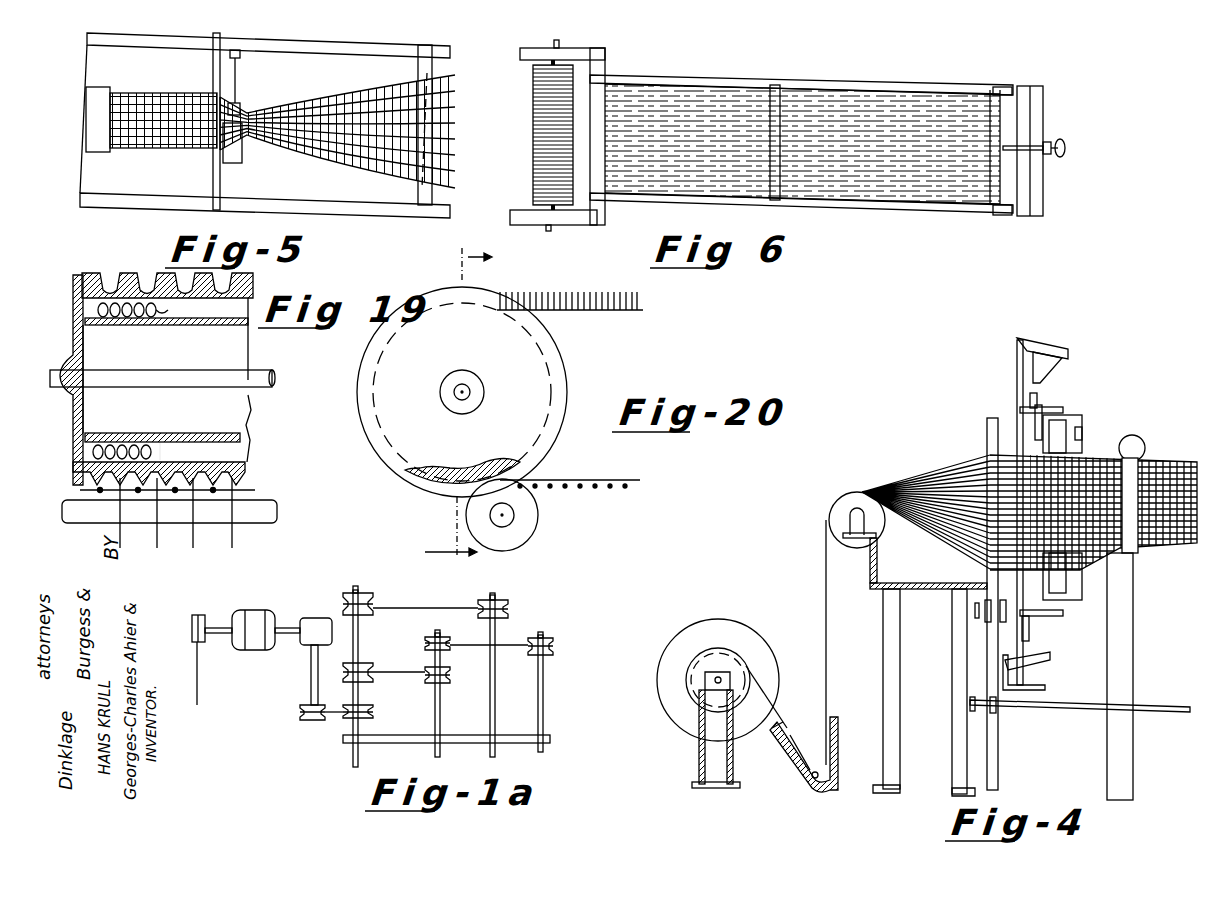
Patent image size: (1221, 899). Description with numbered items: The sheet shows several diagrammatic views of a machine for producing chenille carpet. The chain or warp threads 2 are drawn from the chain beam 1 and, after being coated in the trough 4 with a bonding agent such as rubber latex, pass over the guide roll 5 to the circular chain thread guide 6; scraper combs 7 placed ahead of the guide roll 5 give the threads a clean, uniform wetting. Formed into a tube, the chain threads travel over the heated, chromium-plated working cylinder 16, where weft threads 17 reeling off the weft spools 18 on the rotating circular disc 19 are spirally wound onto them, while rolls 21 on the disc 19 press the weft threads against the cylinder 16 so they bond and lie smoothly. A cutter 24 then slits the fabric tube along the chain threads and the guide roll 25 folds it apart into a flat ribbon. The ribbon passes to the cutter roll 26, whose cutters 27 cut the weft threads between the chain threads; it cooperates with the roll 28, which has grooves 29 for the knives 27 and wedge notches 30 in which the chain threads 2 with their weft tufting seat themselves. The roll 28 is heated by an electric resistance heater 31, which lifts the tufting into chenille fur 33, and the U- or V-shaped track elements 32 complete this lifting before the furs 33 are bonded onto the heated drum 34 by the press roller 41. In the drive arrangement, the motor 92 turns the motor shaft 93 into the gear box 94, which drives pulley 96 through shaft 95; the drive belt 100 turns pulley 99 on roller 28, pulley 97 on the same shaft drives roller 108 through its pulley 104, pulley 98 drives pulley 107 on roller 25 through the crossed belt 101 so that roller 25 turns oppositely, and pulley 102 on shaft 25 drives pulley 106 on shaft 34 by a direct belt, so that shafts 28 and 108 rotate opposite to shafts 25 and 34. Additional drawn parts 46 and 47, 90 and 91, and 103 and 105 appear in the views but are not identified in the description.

In FIG. 4, the chain beam 1 is at (724, 623).
In FIG. 19, the chain or warp threads 2 is at (100, 492).
In FIG. 20, the chain or warp threads 2 is at (603, 312).
In FIG. 4, the chain or warp threads 2 is at (823, 646).
In FIG. 4, the trough 4 is at (797, 735).
In FIG. 4, the guide roll 5 is at (832, 512).
In FIG. 4, the circular chain thread guide 6 is at (990, 424).
In FIG. 4, the scraper combs 7 is at (836, 718).
In FIG. 5, the working cylinder 16 is at (141, 148).
In FIG. 4, the working cylinder 16 is at (1085, 432).
In FIG. 19, the weft threads 17 is at (255, 490).
In FIG. 20, the weft threads 17 is at (605, 483).
In FIG. 4, the weft threads 17 is at (1037, 398).
In FIG. 4, the weft spools 18 is at (1048, 371).
In FIG. 20, the circular disc 19 is at (458, 402).
In FIG. 4, the circular disc 19 is at (1017, 367).
In FIG. 4, the rolls 21 is at (1085, 450).
In FIG. 5, the cutter 24 is at (245, 122).
In FIG. 4, the cutter 24 is at (1147, 442).
In FIG. 5, the guide roll 25 is at (423, 62).
In FIG. 1A, the guide roll 25 is at (432, 755).
In FIG. 19, the cutter roll 26 is at (260, 510).
In FIG. 20, the cutter roll 26 is at (514, 515).
In FIG. 19, the cutters 27 is at (232, 540).
In FIG. 20, the cutters 27 is at (538, 530).
In FIG. 6, the roll 28 is at (541, 71).
In FIG. 19, the roll 28 is at (75, 352).
In FIG. 20, the roll 28 is at (566, 382).
In FIG. 1A, the roll 28 is at (348, 750).
In FIG. 19, the grooves 29 is at (245, 478).
In FIG. 19, the wedge notches 30 is at (178, 460).
In FIG. 20, the wedge notches 30 is at (510, 470).
In FIG. 19, the electric resistance heater 31 is at (165, 312).
In FIG. 6, the track elements 32 is at (858, 112).
In FIG. 6, the chenille fur 33 is at (858, 190).
In FIG. 6, the roll 34 is at (1000, 207).
In FIG. 1A, the roll 34 is at (543, 703).
In FIG. 6, the press roller 41 is at (1046, 146).
In FIG. 4, the bar 46 is at (1173, 712).
In FIG. 4, the post clamp 47 is at (990, 748).
In FIG. 1A, the support 90 is at (197, 697).
In FIG. 1A, the pulley 91 is at (192, 620).
In FIG. 1A, the motor 92 is at (262, 602).
In FIG. 1A, the motor shaft 93 is at (292, 627).
In FIG. 1A, the gear box 94 is at (325, 620).
In FIG. 1A, the shaft 95 is at (311, 678).
In FIG. 1A, the pulley 96 is at (300, 717).
In FIG. 1A, the pulley 97 is at (368, 597).
In FIG. 1A, the pulley 98 is at (366, 670).
In FIG. 1A, the pulley 99 is at (368, 713).
In FIG. 1A, the drive belt 100 is at (338, 718).
In FIG. 1A, the crossed belt 101 is at (410, 684).
In FIG. 1A, the pulley 102 is at (446, 630).
In FIG. 1A, the belt 103 is at (462, 612).
In FIG. 1A, the pulley 104 is at (506, 605).
In FIG. 1A, the belt 105 is at (489, 650).
In FIG. 1A, the pulley 106 is at (555, 645).
In FIG. 1A, the pulley 107 is at (440, 691).
In FIG. 1A, the roller 108 is at (496, 695).